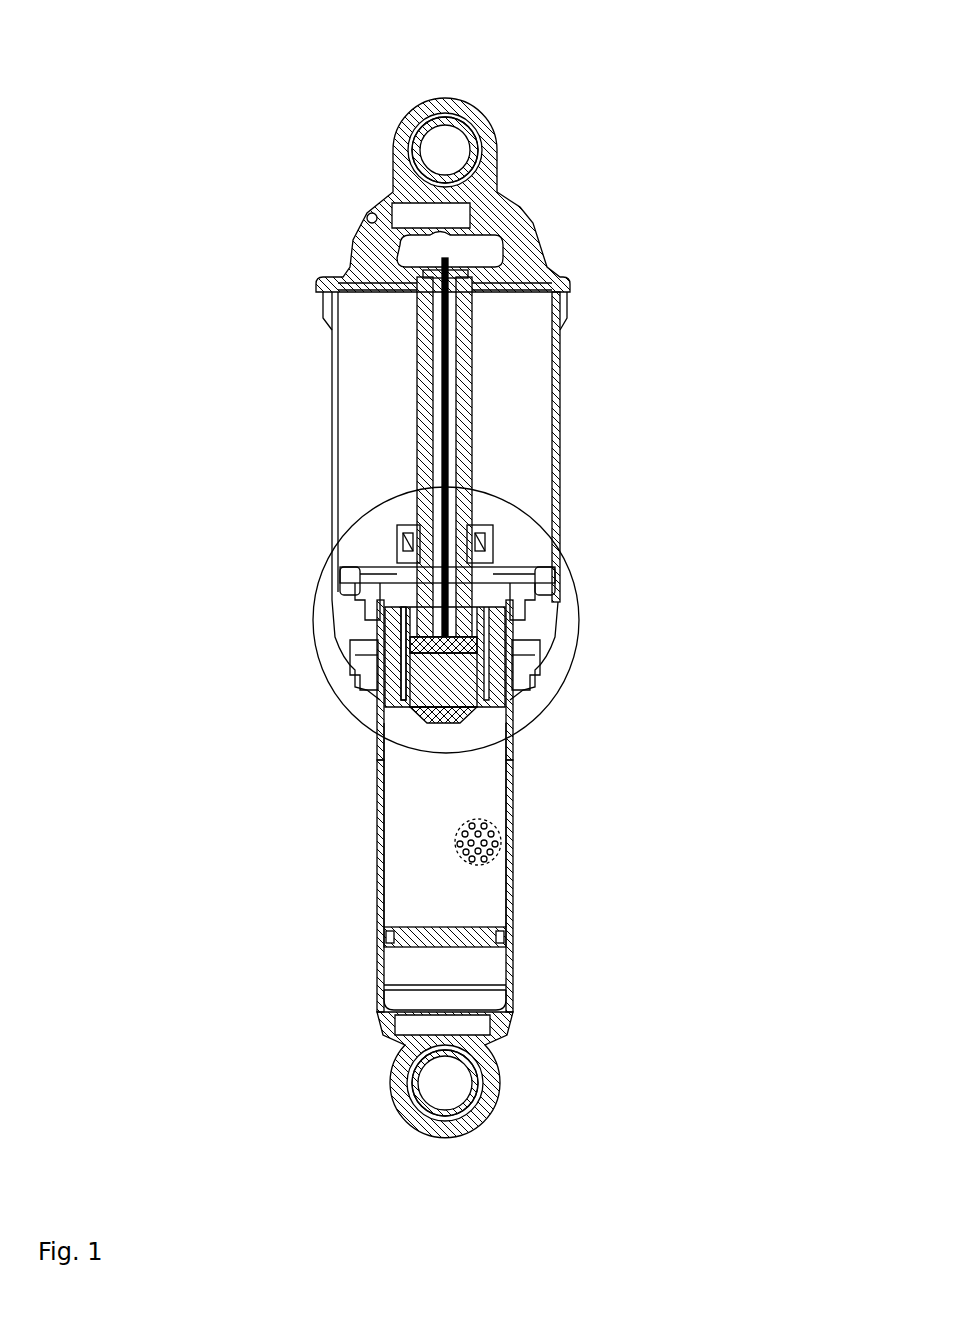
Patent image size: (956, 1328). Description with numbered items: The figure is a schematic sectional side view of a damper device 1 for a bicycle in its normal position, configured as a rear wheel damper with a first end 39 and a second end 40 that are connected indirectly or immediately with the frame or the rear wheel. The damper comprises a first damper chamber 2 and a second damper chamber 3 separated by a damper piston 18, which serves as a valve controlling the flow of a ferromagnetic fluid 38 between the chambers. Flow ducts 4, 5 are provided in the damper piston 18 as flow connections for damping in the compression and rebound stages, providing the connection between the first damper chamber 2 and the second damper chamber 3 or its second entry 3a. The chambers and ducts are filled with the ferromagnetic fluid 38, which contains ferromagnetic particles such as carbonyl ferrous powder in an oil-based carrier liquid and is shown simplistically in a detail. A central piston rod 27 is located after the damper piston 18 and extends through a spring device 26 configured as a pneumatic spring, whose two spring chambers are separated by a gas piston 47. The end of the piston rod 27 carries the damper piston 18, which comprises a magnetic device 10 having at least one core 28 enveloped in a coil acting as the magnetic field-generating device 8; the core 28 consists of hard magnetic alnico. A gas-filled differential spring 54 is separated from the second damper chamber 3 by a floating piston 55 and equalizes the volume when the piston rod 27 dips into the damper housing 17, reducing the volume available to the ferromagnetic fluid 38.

The damper device 1 is at (157, 125).
The first damper chamber 2 is at (345, 576).
The second damper chamber 3 is at (397, 870).
The second entry 3a is at (490, 726).
The flow duct 4 is at (380, 742).
The flow duct 5 is at (487, 712).
The magnetic field-generating device 8 is at (440, 715).
The magnetic device 10 is at (404, 712).
The damper housing 17 is at (528, 895).
The damper piston 18 is at (493, 722).
The spring device 26 is at (300, 405).
The piston rod 27 is at (500, 385).
The core 28 is at (372, 672).
The ferromagnetic fluid 38 is at (503, 838).
The first end 39 is at (492, 66).
The second end 40 is at (502, 1120).
The gas piston 47 is at (520, 600).
The differential spring 54 is at (403, 967).
The floating piston 55 is at (388, 932).